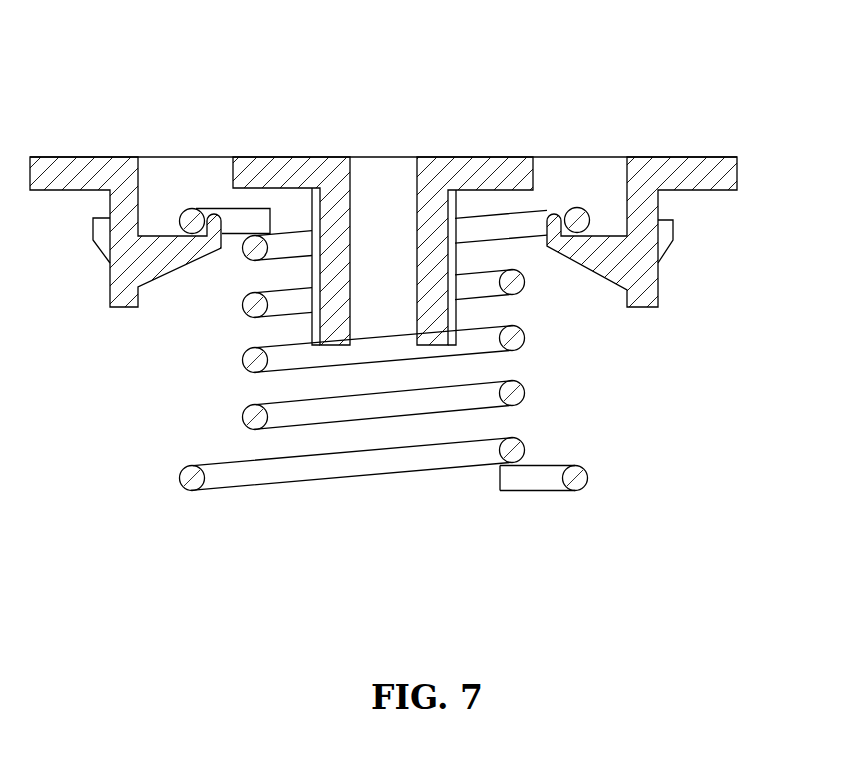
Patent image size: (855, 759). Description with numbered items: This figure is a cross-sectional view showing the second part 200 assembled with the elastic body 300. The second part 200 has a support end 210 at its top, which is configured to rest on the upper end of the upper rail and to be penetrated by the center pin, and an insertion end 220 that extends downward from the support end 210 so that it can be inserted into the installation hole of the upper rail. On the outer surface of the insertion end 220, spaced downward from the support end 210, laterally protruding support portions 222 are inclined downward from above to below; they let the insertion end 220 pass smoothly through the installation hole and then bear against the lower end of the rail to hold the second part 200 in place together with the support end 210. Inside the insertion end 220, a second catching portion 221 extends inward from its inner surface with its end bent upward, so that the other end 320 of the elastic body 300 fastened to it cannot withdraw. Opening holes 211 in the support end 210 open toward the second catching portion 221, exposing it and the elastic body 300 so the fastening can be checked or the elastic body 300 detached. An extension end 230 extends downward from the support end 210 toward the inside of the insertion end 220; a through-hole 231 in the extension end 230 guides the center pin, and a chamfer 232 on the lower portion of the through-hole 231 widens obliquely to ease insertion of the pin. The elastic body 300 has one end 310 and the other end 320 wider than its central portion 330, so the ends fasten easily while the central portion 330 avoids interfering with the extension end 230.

The second part 200 is at (411, 299).
The support end 210 is at (384, 114).
The opening hole 211 is at (575, 172).
The insertion end 220 is at (411, 280).
The second catching portion 221 is at (573, 252).
The support portion 222 is at (662, 234).
The extension end 230 is at (380, 299).
The through-hole 231 is at (380, 268).
The chamfer 232 is at (343, 340).
The elastic body 300 is at (399, 287).
The one end of the elastic body 310 is at (588, 475).
The other end of the elastic body 320 is at (189, 209).
The central portion of the elastic body 330 is at (243, 357).